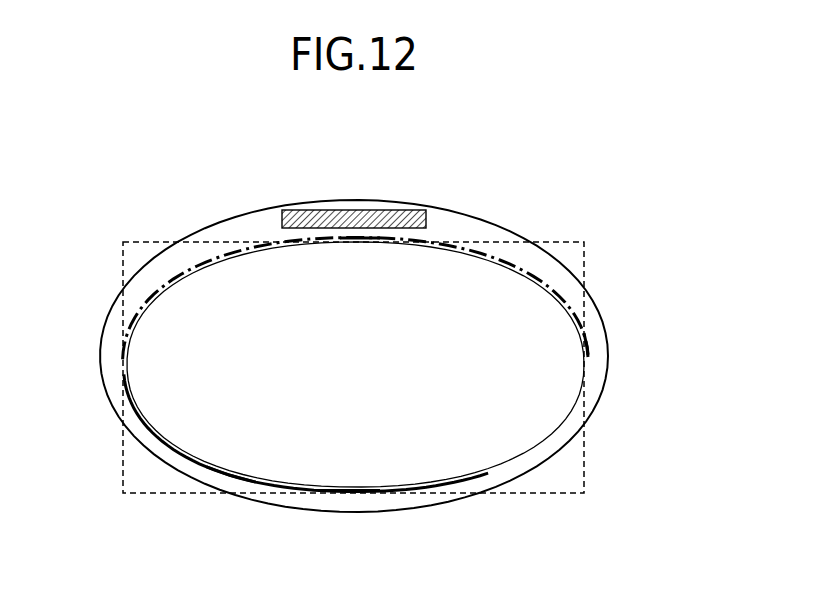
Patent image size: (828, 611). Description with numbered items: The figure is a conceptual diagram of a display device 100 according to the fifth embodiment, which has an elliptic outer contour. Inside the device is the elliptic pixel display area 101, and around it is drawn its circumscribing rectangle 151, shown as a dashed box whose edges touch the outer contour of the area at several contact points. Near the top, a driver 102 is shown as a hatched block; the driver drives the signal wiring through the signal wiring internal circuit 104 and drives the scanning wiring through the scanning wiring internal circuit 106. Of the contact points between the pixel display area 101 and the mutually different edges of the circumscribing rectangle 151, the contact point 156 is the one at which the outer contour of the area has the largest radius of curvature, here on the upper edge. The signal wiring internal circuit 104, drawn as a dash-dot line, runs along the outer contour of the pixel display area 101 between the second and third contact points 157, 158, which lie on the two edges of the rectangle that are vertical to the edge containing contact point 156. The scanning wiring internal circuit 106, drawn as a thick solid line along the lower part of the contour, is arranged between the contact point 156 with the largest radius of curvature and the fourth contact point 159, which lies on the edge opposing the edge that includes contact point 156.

The display device 100 is at (260, 212).
The pixel display area 101 is at (583, 418).
The driver 102 is at (407, 210).
The signal wiring internal circuit 104 is at (477, 255).
The scanning wiring internal circuit 106 is at (230, 475).
The circumscribing rectangle 151 is at (505, 493).
The contact point 156 is at (366, 243).
The second contact point 157 is at (125, 390).
The third contact point 158 is at (585, 357).
The fourth contact point 159 is at (347, 495).